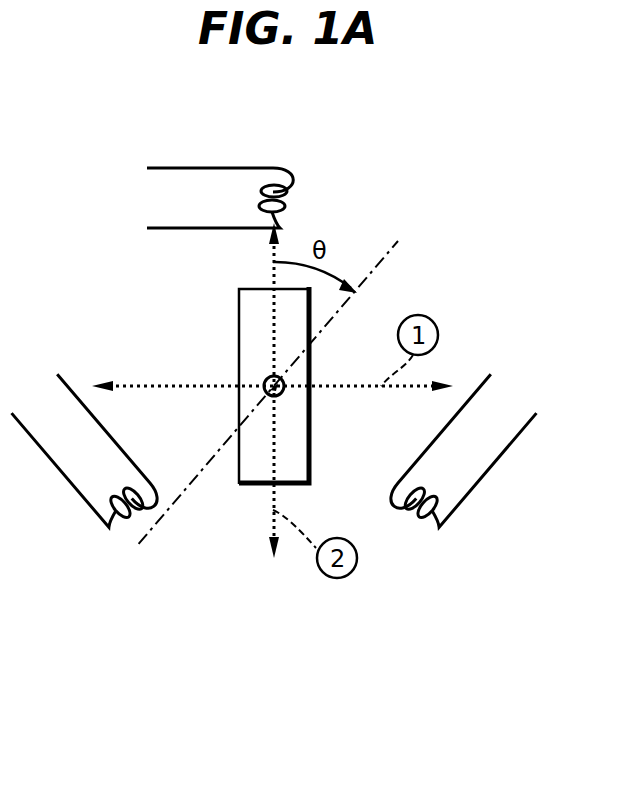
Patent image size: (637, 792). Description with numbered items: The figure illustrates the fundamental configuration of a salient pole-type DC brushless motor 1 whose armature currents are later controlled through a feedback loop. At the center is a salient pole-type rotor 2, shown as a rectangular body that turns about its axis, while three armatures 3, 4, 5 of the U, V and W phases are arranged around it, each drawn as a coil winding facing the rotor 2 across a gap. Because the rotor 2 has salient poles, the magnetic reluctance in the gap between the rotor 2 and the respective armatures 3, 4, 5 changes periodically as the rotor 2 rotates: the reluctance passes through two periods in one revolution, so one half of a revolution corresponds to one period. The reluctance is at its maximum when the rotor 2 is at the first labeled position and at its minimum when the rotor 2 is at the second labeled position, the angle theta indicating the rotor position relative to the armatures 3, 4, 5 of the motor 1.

The salient pole-type DC brushless motor 1 is at (453, 228).
The salient pole-type rotor 2 is at (238, 318).
The armature 3 is at (296, 180).
The armature 4 is at (112, 530).
The armature 5 is at (428, 530).